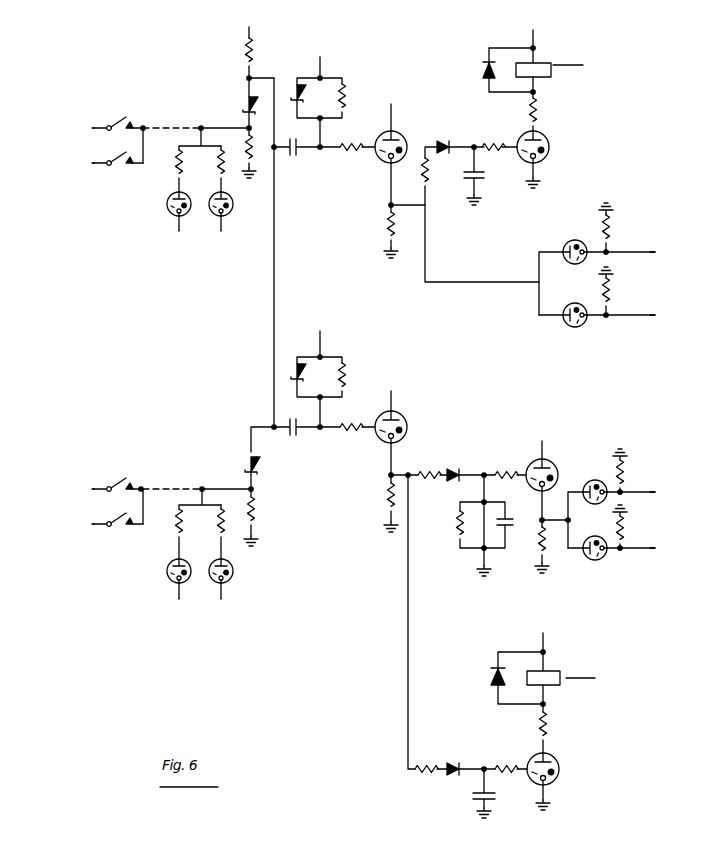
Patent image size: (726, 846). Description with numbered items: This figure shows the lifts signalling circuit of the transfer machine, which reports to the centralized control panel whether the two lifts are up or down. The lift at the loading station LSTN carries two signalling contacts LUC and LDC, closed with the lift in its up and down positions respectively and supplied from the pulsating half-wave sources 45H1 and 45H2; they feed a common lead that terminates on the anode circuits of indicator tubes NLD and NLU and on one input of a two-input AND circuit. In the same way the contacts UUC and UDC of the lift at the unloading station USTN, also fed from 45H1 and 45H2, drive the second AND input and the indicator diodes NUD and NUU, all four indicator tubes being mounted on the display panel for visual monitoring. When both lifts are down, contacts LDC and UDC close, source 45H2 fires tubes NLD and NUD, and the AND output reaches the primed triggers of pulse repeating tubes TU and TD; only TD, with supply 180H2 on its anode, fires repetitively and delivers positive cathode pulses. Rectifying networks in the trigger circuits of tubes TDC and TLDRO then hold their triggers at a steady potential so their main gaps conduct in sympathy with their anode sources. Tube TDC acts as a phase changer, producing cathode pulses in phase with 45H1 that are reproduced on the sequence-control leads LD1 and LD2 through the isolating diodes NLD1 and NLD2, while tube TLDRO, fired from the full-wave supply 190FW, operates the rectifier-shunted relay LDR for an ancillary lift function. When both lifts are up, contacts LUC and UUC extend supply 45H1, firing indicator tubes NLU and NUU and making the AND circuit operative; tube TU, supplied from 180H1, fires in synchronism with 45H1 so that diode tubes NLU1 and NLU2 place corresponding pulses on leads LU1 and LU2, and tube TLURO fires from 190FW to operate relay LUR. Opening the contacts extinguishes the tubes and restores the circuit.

The lift up signalling contact LUC is at (119, 115).
The lift down signalling contact LDC is at (118, 146).
The loading station LSTN is at (163, 161).
The 45 volt half-wave supply of one phase 45H1 is at (77, 308).
The 45 volt half-wave supply of complementary phase 45H2 is at (77, 343).
The indicator tube for loading lift down NLD is at (180, 179).
The indicator tube for loading lift up NLU is at (235, 188).
The 180 volt half-wave supply of one phase 180H1 is at (467, 274).
The 180 volt half-wave supply of complementary phase 180H2 is at (393, 394).
The pulse repeating tube for lifts up TU is at (348, 194).
The pulse repeating tube for lifts down TD is at (335, 477).
The lift up relay operating tube TLURO is at (508, 204).
The full-wave rectified supply lead 190FW is at (539, 334).
The lift up relay LUR is at (533, 84).
The first lift up isolating diode tube NLU1 is at (597, 259).
The second lift up isolating diode tube NLU2 is at (597, 297).
The first lifts up output lead LU1 is at (665, 253).
The second lifts up output lead LU2 is at (665, 317).
The phase changer tube TDC is at (492, 511).
The first lift down isolating diode tube NLD1 is at (611, 498).
The second lift down isolating diode tube NLD2 is at (611, 532).
The first lifts down output lead LD1 is at (666, 493).
The second lifts down output lead LD2 is at (666, 549).
The lift down relay operating tube TLDRO is at (508, 646).
The lift down relay LDR is at (543, 693).
The unloading lift up signalling contact UUC is at (118, 476).
The unloading lift down signalling contact UDC is at (118, 507).
The unloading station USTN is at (169, 522).
The indicator tube for unloading lift down NUD is at (174, 543).
The indicator tube for unloading lift up NUU is at (237, 551).